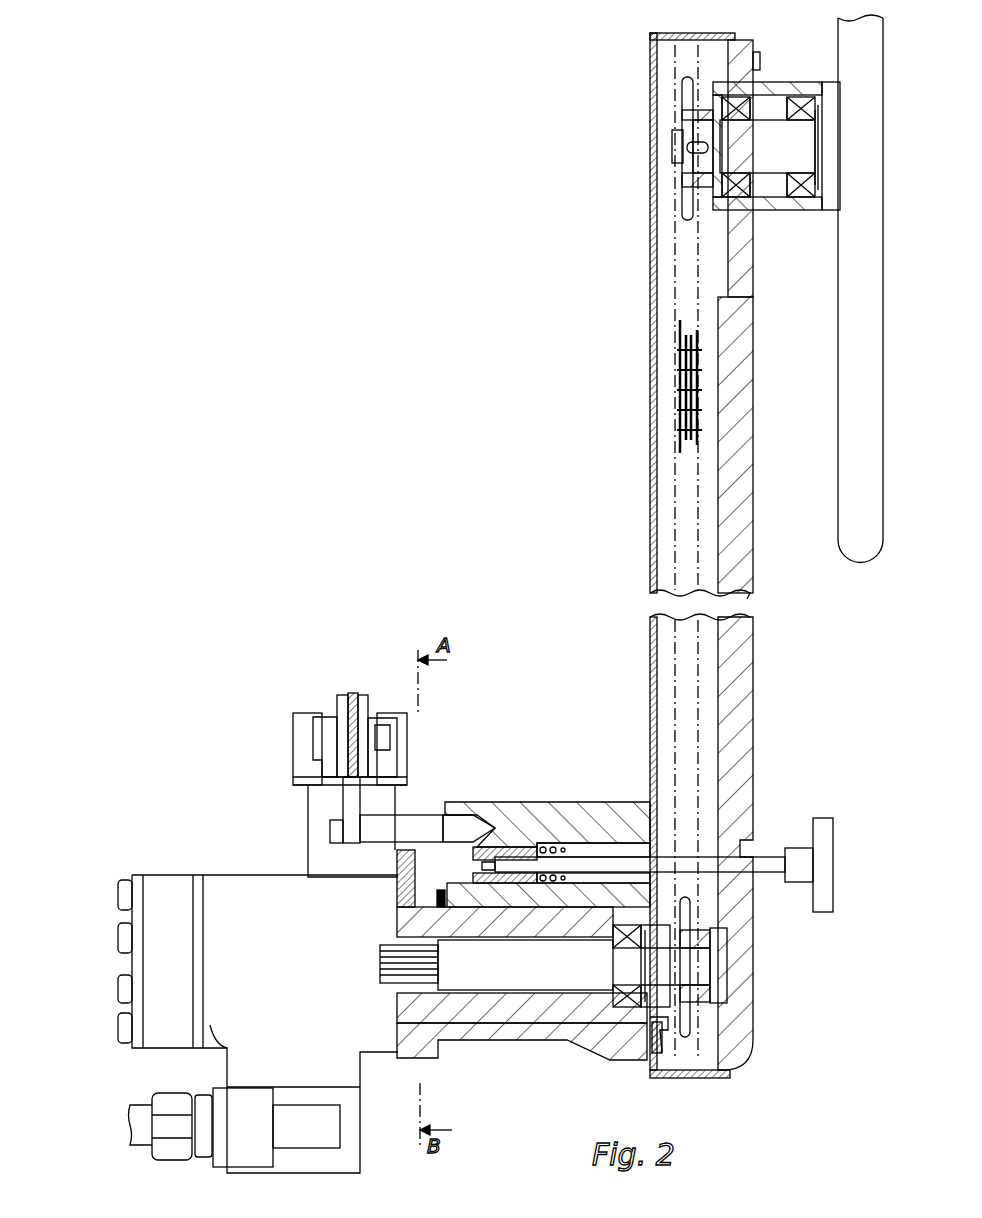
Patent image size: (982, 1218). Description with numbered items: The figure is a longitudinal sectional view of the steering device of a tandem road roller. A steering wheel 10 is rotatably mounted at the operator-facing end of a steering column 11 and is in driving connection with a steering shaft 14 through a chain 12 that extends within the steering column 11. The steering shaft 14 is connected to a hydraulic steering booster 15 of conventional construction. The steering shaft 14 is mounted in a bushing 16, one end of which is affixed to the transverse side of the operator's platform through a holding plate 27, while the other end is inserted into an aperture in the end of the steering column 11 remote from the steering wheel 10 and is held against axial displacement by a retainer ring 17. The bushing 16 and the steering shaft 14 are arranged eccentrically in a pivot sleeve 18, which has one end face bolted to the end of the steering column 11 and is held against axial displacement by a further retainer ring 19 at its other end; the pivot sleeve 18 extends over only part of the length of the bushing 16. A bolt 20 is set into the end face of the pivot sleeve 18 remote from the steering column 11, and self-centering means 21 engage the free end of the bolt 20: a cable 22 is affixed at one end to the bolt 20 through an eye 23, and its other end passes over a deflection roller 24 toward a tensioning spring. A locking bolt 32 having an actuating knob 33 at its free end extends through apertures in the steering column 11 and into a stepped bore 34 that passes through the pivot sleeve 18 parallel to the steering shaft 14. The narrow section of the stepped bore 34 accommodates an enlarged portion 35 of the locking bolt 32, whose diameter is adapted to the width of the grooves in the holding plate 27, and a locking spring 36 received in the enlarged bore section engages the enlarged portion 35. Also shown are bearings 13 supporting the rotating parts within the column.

The steering wheel 10 is at (847, 495).
The steering column 11 is at (673, 532).
The chain 12 is at (677, 390).
The hub bearing assembly 13 is at (682, 178).
The steering shaft 14 is at (503, 980).
The hydraulic steering booster 15 is at (360, 1045).
The bushing 16 is at (527, 1017).
The retainer ring 17 is at (730, 1077).
The pivot sleeve 18 is at (580, 822).
The further retainer ring 19 is at (436, 888).
The bolt 20 is at (442, 820).
The self-centering means 21 is at (333, 685).
The cable 22 is at (352, 695).
The eye 23 is at (350, 803).
The deflection roller 24 is at (362, 712).
The holding plate 27 is at (438, 1057).
The locking bolt 32 is at (770, 857).
The actuating knob 33 is at (826, 832).
The stepped bore 34 is at (602, 850).
The enlarged portion 35 is at (508, 847).
The locking spring 36 is at (543, 850).